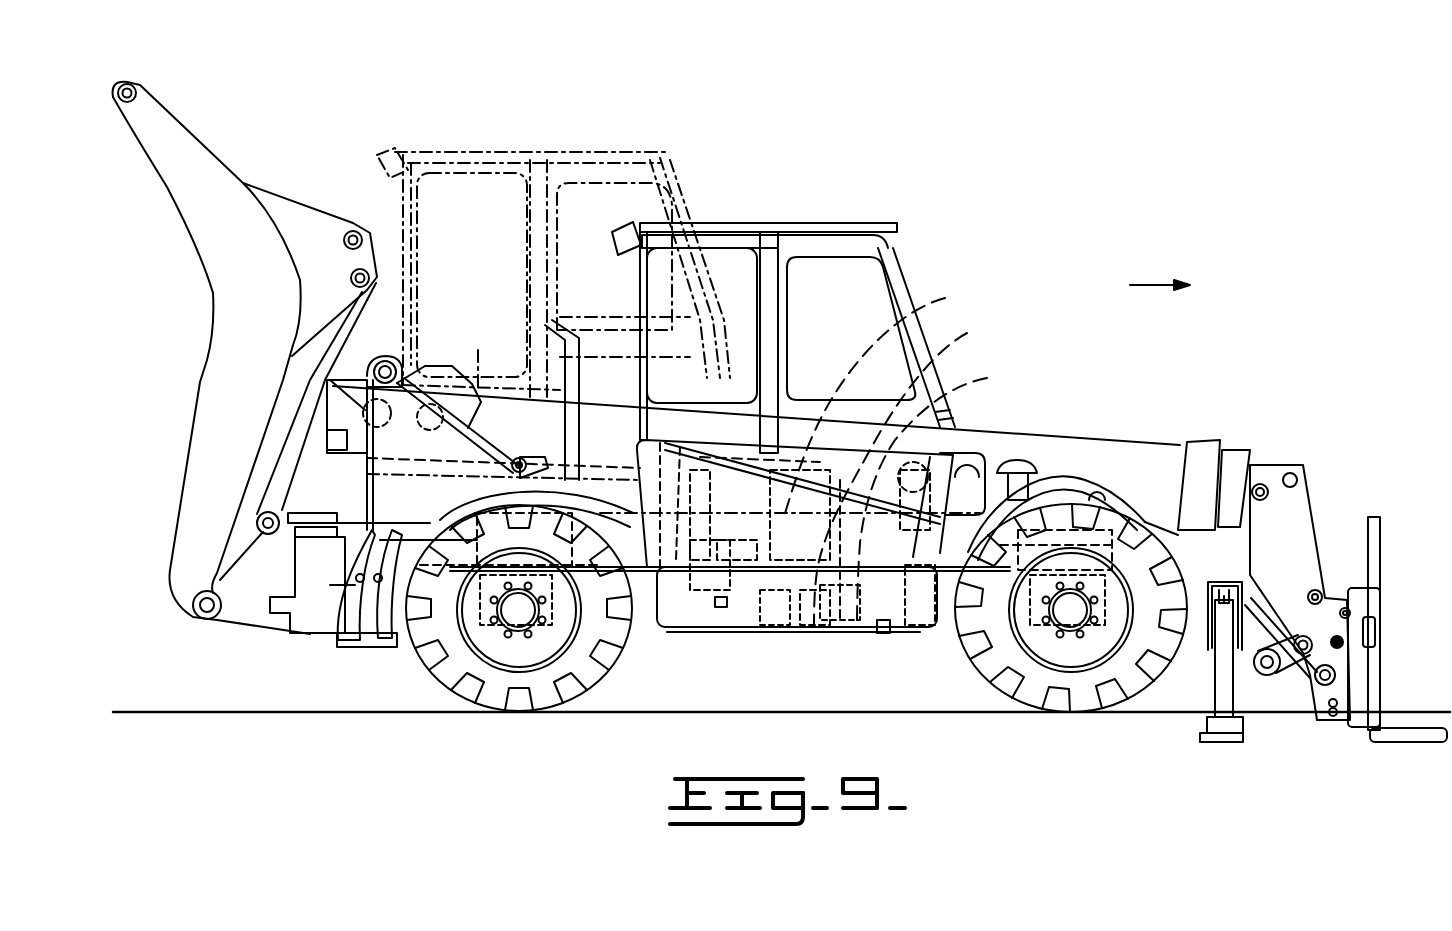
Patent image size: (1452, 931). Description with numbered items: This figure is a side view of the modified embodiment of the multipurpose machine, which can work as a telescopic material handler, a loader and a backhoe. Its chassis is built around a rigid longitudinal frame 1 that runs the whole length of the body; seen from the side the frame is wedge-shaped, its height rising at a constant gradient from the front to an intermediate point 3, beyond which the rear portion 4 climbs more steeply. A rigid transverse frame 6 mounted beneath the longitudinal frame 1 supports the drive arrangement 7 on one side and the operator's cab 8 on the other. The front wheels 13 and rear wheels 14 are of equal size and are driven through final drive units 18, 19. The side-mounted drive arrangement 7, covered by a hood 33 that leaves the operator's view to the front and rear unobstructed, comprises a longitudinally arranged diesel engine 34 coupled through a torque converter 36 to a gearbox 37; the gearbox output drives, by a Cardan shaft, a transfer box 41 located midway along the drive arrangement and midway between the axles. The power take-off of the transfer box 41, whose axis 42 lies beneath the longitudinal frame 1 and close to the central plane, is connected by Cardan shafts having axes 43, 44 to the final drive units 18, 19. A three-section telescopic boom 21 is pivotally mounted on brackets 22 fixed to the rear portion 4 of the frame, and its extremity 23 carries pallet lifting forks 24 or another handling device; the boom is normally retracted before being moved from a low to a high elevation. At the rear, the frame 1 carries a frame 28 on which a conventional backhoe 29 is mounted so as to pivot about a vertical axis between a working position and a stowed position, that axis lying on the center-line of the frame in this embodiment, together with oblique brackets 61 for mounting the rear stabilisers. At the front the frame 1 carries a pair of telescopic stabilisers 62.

The backhoe 29 is at (236, 122).
The brackets 22 is at (413, 373).
The rear portion 4 is at (452, 427).
The intermediate point 3 is at (513, 445).
The hood 33 is at (708, 440).
The drive arrangement 7 is at (646, 432).
The operator's cab 8 is at (723, 242).
The diesel engine 34 is at (882, 399).
The longitudinal frame 1 is at (901, 470).
The torque converter 36 is at (940, 493).
The telescopic boom 21 is at (1040, 443).
The extremity 23 is at (1307, 550).
The pallet lifting forks 24 is at (1392, 740).
The telescopic stabilisers 62 is at (1227, 688).
The frame 28 is at (292, 620).
The oblique brackets 61 is at (353, 637).
The rear wheels 14 is at (552, 627).
The final drive unit 19 is at (560, 620).
The transverse frame 6 is at (677, 633).
The Cardan shaft axis 44 is at (700, 613).
The power take-off axis 42 is at (813, 627).
The Cardan shaft axis 43 is at (947, 627).
The transfer box 41 is at (813, 573).
The gearbox 37 is at (893, 633).
The final drive unit 18 is at (1003, 660).
The front wheels 13 is at (1066, 630).